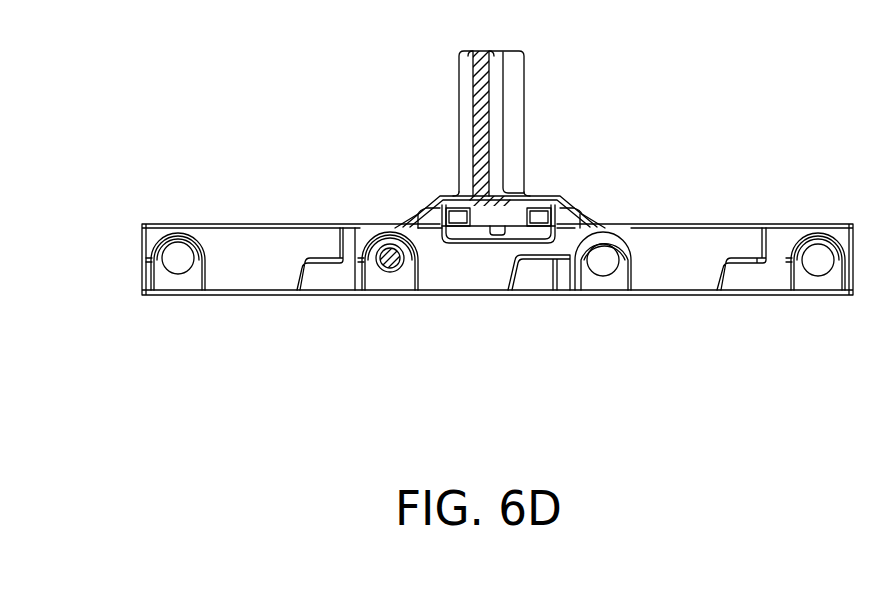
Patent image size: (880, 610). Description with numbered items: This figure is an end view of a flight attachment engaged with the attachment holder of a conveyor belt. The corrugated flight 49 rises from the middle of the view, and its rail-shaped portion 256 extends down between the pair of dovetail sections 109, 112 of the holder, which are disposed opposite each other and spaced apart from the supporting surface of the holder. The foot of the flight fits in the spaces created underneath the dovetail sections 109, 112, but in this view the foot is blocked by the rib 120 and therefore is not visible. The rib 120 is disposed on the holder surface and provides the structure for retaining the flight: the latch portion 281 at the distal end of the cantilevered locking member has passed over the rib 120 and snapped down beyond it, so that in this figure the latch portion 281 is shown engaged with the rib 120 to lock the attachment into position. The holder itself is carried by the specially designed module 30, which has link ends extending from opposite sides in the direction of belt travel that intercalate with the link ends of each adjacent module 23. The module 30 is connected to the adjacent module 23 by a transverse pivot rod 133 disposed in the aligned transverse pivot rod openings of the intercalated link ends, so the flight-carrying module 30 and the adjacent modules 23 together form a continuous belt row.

The adjacent module 23 is at (248, 262).
The module 30 is at (462, 293).
The corrugated flight 49 is at (483, 92).
The dovetail section 109 is at (440, 203).
The dovetail section 112 is at (530, 206).
The rib 120 is at (473, 249).
The transverse pivot rod 133 is at (383, 268).
The rail-shaped portion 256 is at (465, 191).
The latch portion 281 is at (497, 234).